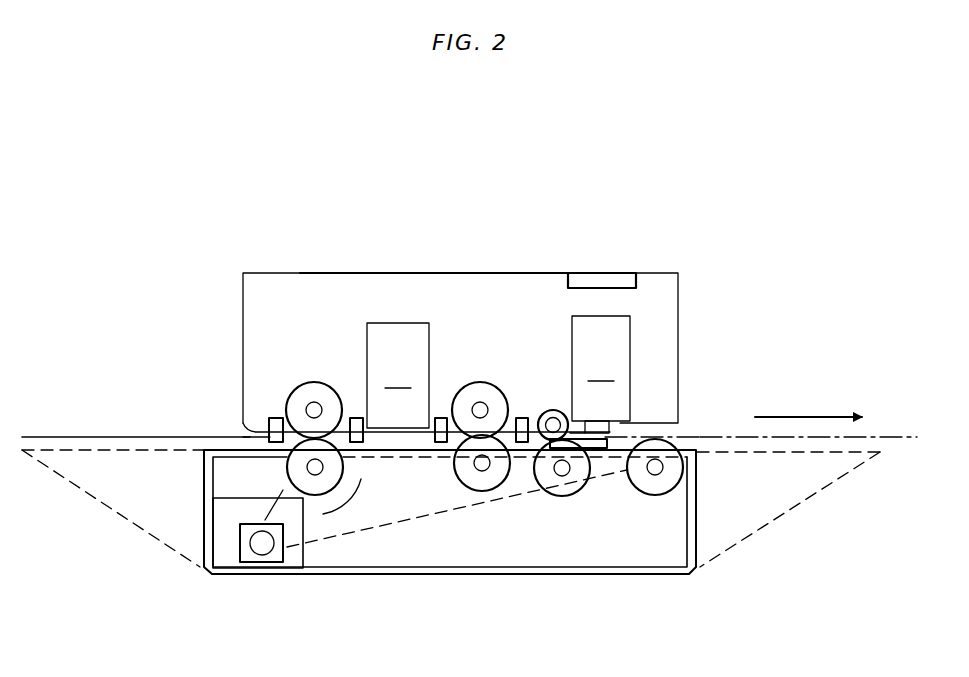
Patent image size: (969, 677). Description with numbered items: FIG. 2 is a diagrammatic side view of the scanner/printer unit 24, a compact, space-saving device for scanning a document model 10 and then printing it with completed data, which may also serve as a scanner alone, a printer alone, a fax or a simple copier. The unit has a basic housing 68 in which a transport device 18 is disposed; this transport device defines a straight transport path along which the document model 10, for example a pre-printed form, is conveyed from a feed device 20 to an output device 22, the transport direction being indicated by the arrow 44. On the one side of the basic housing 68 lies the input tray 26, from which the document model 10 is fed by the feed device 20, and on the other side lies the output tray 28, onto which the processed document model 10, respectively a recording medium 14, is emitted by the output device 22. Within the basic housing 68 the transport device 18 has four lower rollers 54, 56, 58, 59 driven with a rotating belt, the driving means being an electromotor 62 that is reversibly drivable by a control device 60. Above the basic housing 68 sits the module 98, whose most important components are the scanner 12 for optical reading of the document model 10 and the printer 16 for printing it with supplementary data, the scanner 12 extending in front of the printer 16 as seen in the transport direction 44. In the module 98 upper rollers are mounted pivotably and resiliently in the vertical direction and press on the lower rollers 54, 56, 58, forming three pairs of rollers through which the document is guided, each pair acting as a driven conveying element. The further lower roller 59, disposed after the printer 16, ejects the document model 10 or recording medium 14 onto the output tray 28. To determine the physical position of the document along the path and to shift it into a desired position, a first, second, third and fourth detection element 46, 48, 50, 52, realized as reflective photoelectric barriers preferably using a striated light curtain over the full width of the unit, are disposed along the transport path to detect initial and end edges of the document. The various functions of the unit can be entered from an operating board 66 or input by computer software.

The document model 10 is at (90, 437).
The scanner 12 is at (398, 375).
The recording medium 14 is at (906, 440).
The printer 16 is at (600, 374).
The transport device 18 is at (346, 538).
The feed device 20 is at (246, 432).
The output device 22 is at (683, 428).
The scanner/printer unit 24 is at (692, 352).
The input tray 26 is at (114, 504).
The output tray 28 is at (760, 512).
The transport direction 44 is at (812, 415).
The first detection element 46 is at (274, 418).
The second detection element 48 is at (356, 418).
The third detection element 50 is at (441, 418).
The fourth detection element 52 is at (522, 418).
The lower roller 54 is at (317, 384).
The lower roller 56 is at (481, 383).
The lower roller 58 is at (555, 410).
The lower roller 59 is at (657, 493).
The control device 60 is at (225, 562).
The electromotor 62 is at (274, 562).
The operating board 66 is at (604, 275).
The basic housing 68 is at (452, 576).
The module 98 is at (459, 270).